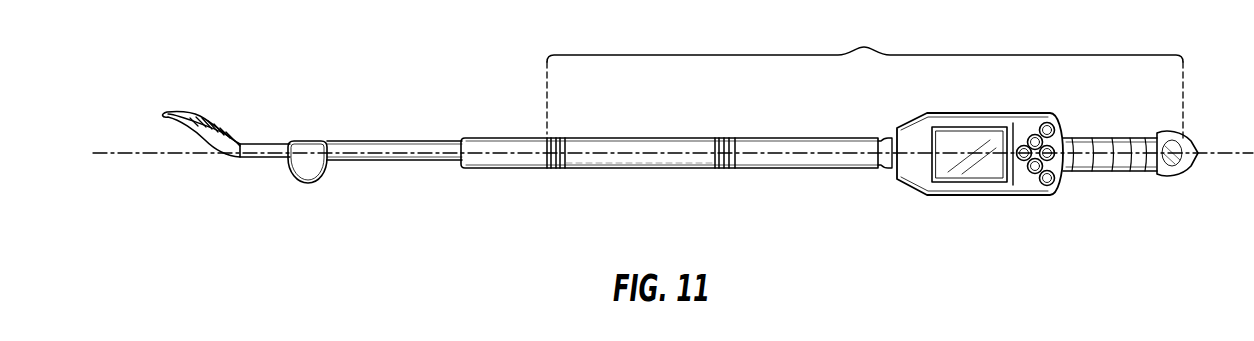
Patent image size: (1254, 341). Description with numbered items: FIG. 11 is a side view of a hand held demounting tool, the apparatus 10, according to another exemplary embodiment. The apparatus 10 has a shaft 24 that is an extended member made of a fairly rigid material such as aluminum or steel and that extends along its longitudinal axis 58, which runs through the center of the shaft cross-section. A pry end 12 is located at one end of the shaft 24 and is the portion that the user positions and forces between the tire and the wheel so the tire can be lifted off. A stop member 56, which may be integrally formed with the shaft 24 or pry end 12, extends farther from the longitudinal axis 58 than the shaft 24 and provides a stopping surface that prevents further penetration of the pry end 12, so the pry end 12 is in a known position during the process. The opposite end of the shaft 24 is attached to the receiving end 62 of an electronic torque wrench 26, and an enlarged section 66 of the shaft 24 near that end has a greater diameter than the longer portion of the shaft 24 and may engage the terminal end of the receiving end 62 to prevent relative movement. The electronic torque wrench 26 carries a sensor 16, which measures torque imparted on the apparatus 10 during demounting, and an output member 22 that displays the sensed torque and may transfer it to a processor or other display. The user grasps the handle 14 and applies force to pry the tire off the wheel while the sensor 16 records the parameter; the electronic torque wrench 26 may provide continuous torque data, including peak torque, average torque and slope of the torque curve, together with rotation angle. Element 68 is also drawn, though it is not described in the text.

The apparatus 10 is at (141, 59).
The pry end 12 is at (214, 134).
The handle 14 is at (1090, 166).
The sensor 16 is at (1045, 128).
The output member 22 is at (948, 125).
The shaft 24 is at (362, 161).
The electronic torque wrench 26 is at (865, 79).
The stop member 56 is at (298, 171).
The longitudinal axis 58 is at (133, 155).
The receiving end 62 is at (547, 136).
The enlarged section 66 is at (507, 162).
The tube segment 68 is at (643, 163).